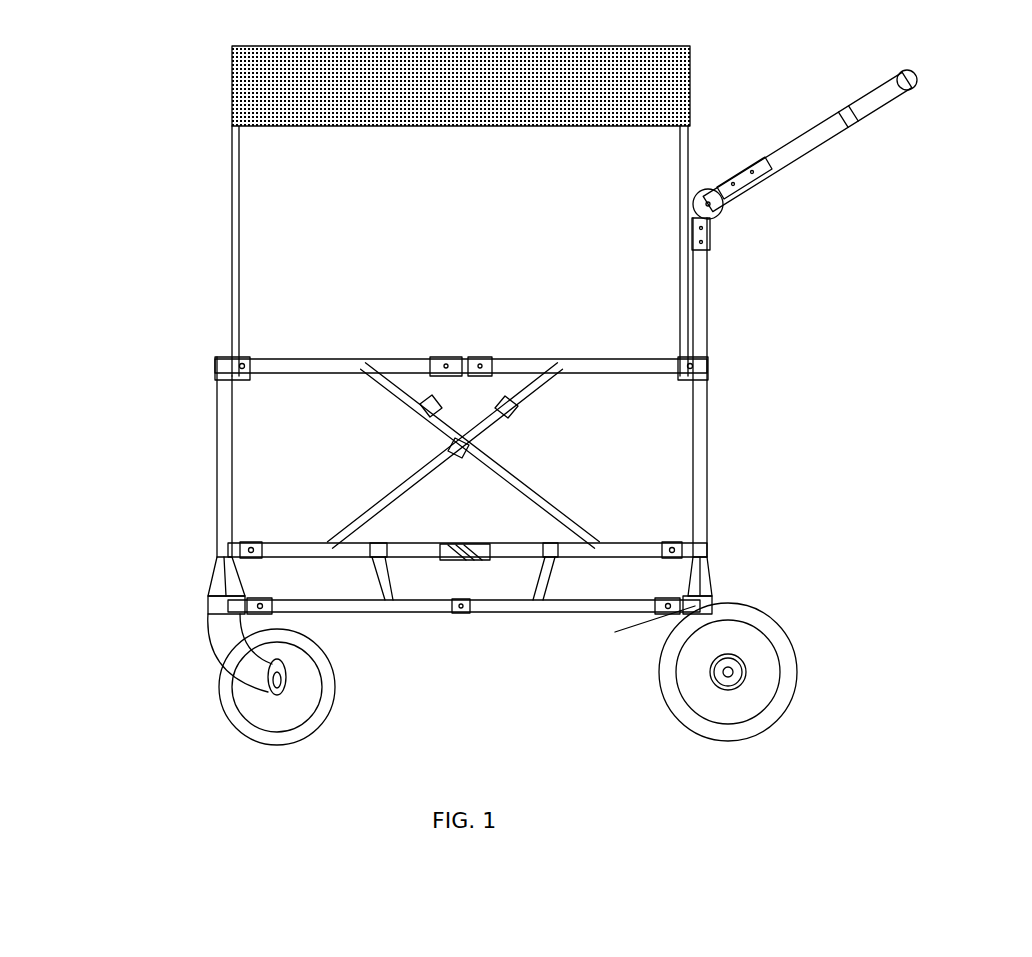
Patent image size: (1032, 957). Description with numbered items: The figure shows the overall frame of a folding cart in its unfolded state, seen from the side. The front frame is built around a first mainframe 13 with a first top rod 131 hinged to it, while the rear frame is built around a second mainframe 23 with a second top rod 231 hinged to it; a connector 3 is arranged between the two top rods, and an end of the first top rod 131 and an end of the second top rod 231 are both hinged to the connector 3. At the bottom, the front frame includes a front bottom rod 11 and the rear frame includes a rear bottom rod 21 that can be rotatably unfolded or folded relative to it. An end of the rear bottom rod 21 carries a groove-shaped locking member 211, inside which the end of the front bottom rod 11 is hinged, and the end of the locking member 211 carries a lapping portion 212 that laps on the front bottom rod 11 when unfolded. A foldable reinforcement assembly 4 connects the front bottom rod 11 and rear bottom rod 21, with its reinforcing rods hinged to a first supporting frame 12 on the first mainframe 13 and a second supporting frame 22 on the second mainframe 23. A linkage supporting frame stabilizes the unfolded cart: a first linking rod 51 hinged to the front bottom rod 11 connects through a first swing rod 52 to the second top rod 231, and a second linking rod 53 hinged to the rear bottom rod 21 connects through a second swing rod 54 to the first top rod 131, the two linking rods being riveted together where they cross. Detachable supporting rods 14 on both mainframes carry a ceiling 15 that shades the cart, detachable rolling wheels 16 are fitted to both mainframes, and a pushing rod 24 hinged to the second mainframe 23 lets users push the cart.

The ceiling 15 is at (232, 68).
The supporting rod 14 is at (234, 236).
The first mainframe 13 is at (218, 442).
The first top rod 131 is at (215, 368).
The connector 3 is at (480, 358).
The second top rod 231 is at (708, 370).
The second mainframe 23 is at (700, 440).
The pushing rod 24 is at (780, 150).
The second swing rod 54 is at (363, 362).
The first swing rod 52 is at (562, 364).
The front bottom rod 11 is at (282, 543).
The rear bottom rod 21 is at (637, 543).
The first supporting frame 12 is at (212, 601).
The lapping portion 212 is at (452, 562).
The locking member 211 is at (482, 562).
The first linking rod 51 is at (212, 584).
The second supporting frame 22 is at (700, 600).
The second linking rod 53 is at (684, 615).
The foldable reinforcement assembly 4 is at (204, 678).
The rolling wheel 16 is at (762, 682).